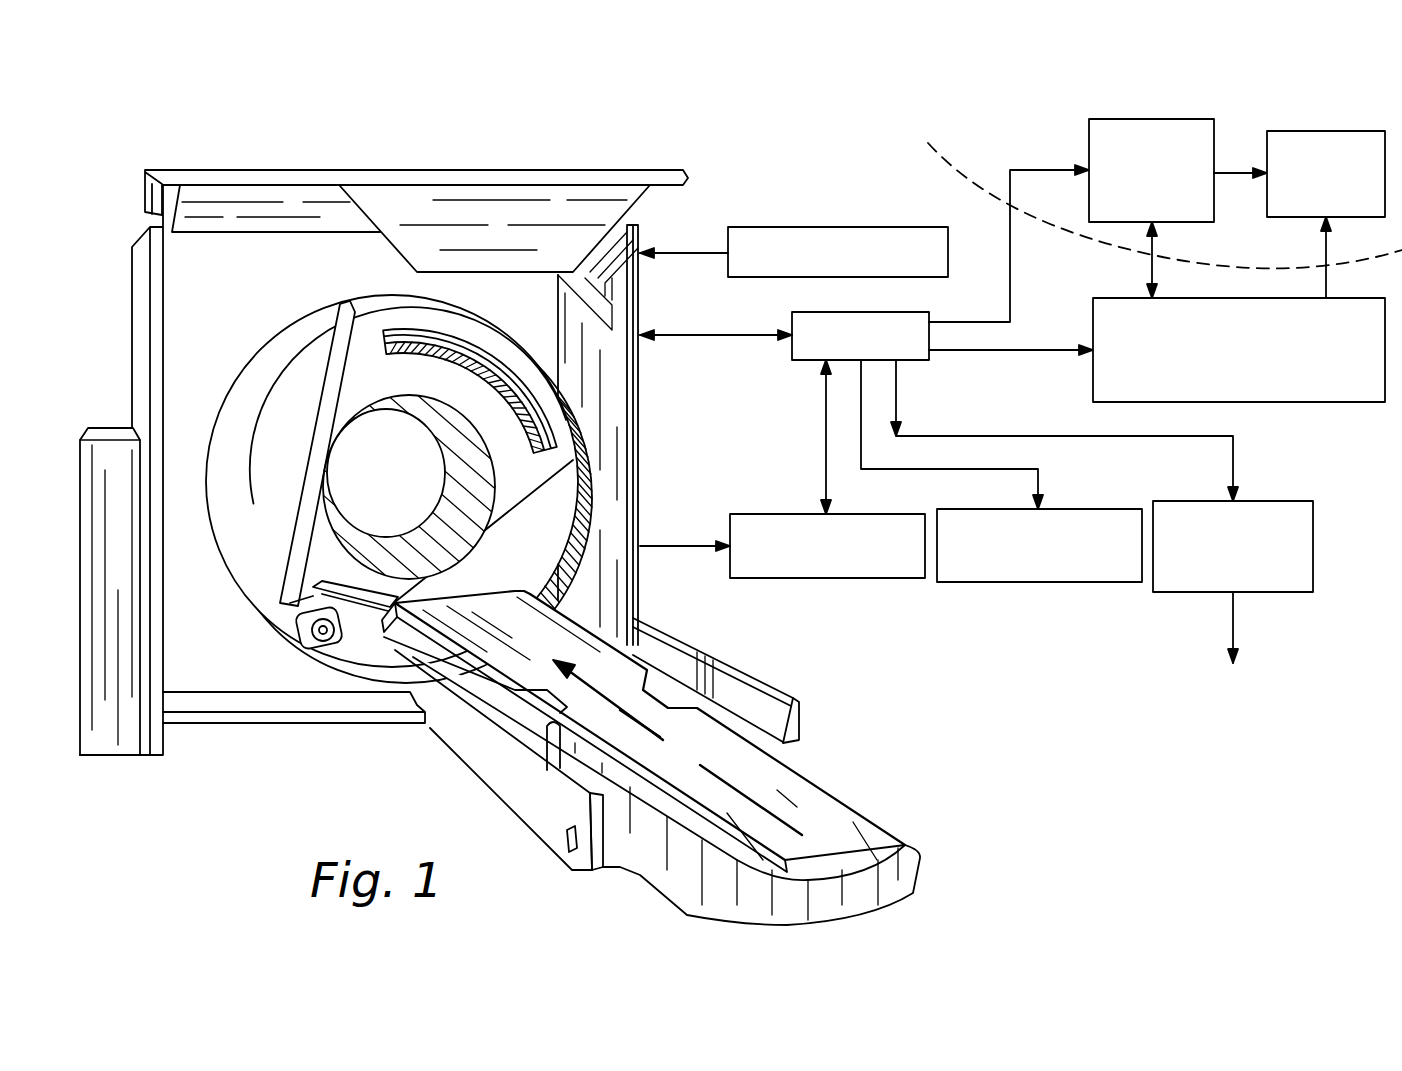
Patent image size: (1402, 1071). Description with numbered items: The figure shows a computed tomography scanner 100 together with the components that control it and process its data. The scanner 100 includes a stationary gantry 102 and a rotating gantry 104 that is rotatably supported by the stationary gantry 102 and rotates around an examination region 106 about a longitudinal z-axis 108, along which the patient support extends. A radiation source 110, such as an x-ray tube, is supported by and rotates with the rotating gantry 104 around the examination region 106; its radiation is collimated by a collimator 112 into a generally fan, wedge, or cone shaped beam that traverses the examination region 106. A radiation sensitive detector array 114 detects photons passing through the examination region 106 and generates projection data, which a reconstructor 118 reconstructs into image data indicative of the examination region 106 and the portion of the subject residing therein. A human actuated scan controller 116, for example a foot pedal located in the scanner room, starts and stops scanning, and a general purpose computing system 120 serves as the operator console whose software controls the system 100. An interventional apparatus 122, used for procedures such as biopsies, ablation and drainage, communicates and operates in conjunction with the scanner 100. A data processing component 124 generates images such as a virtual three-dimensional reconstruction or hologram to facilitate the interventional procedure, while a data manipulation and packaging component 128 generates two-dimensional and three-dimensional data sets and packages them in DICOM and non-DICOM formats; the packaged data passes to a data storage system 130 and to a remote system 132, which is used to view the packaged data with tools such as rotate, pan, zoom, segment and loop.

The computed tomography (CT) scanner 100 is at (146, 128).
The stationary gantry 102 is at (153, 345).
The rotating gantry 104 is at (352, 368).
The examination region 106 is at (402, 477).
The z-axis 108 is at (714, 765).
The radiation source 110 is at (320, 646).
The collimator 112 is at (362, 618).
The radiation sensitive detector array 114 is at (533, 408).
The human actuated scan controller 116 is at (838, 227).
The reconstructor 118 is at (858, 836).
The general purpose computing system 120 is at (792, 320).
The interventional apparatus 122 is at (1013, 582).
The data processing component 124 is at (1313, 543).
The data manipulation and packaging component 128 is at (1293, 402).
The data storage system 130 is at (1162, 119).
The remote system 132 is at (1325, 131).